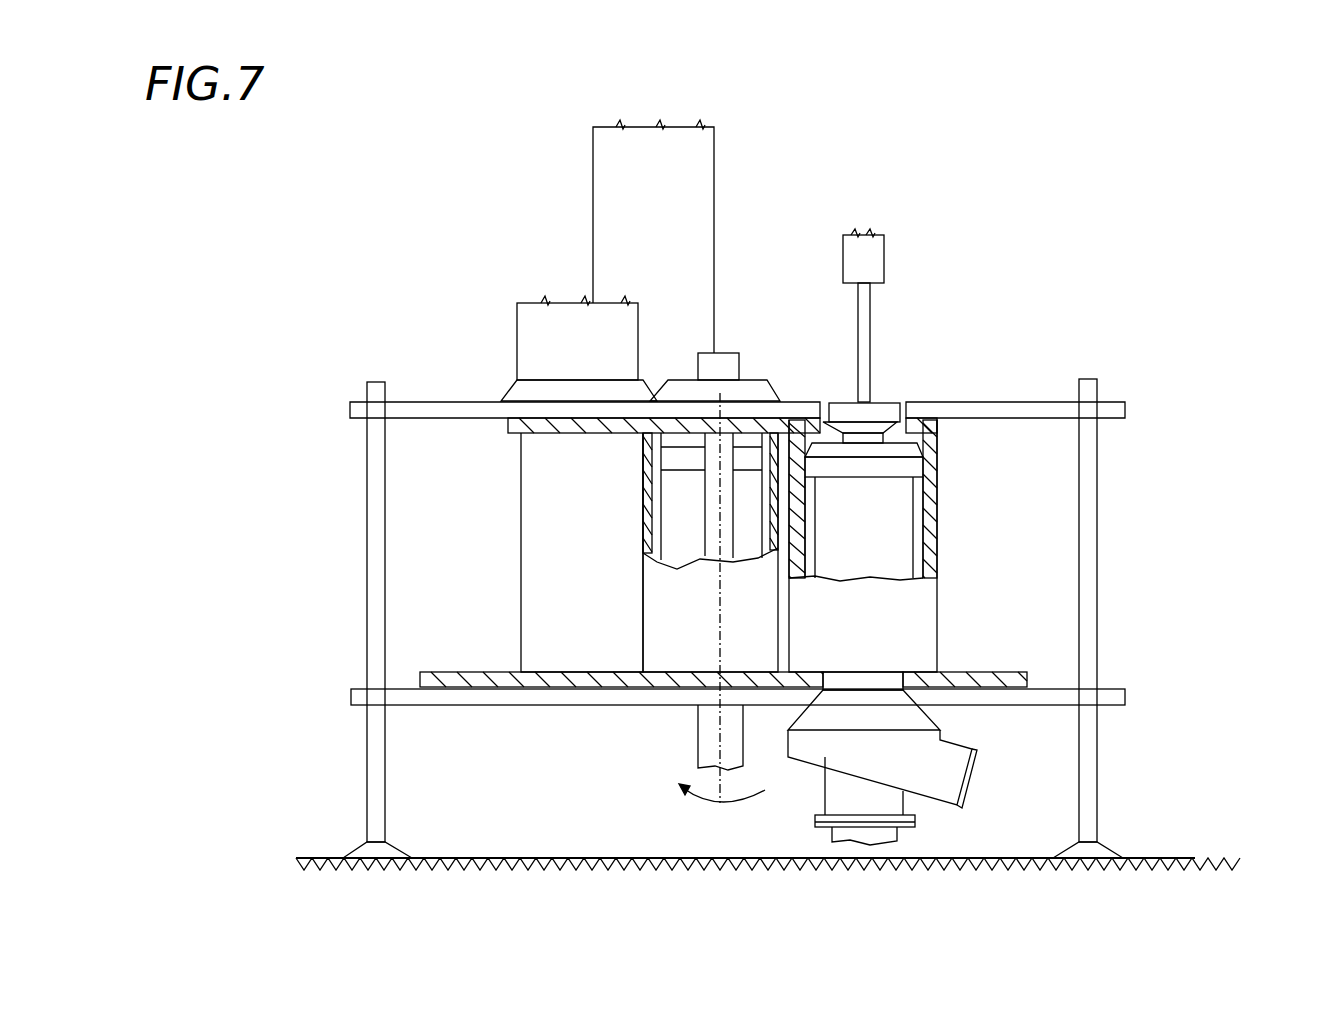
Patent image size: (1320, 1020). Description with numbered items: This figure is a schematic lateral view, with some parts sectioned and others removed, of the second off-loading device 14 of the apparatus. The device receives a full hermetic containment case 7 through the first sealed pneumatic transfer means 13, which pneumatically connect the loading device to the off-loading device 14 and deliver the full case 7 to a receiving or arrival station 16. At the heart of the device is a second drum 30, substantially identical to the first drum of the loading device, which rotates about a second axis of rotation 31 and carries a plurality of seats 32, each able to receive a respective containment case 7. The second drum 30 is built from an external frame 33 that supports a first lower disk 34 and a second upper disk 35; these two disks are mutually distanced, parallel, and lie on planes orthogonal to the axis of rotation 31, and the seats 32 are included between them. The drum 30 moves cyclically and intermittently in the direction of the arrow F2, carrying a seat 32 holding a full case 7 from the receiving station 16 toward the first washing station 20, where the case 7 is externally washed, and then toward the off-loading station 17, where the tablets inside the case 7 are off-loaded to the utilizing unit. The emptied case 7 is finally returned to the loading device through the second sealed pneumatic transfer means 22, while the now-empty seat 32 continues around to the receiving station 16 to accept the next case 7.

The hermetic containment case 7 is at (903, 490).
The first sealed pneumatic transfer means 13 is at (566, 332).
The second off-loading device 14 is at (475, 372).
The arrival station 16 is at (498, 458).
The off-loading station 17 is at (902, 393).
The first washing station 20 is at (670, 370).
The second sealed pneumatic transfer means 22 is at (657, 165).
The second drum 30 is at (1054, 530).
The second axis of rotation 31 is at (722, 782).
The seats 32 is at (788, 530).
The external frame 33 is at (1106, 757).
The first lower disk 34 is at (608, 680).
The second upper disk 35 is at (512, 430).
The arrow F2 is at (697, 803).